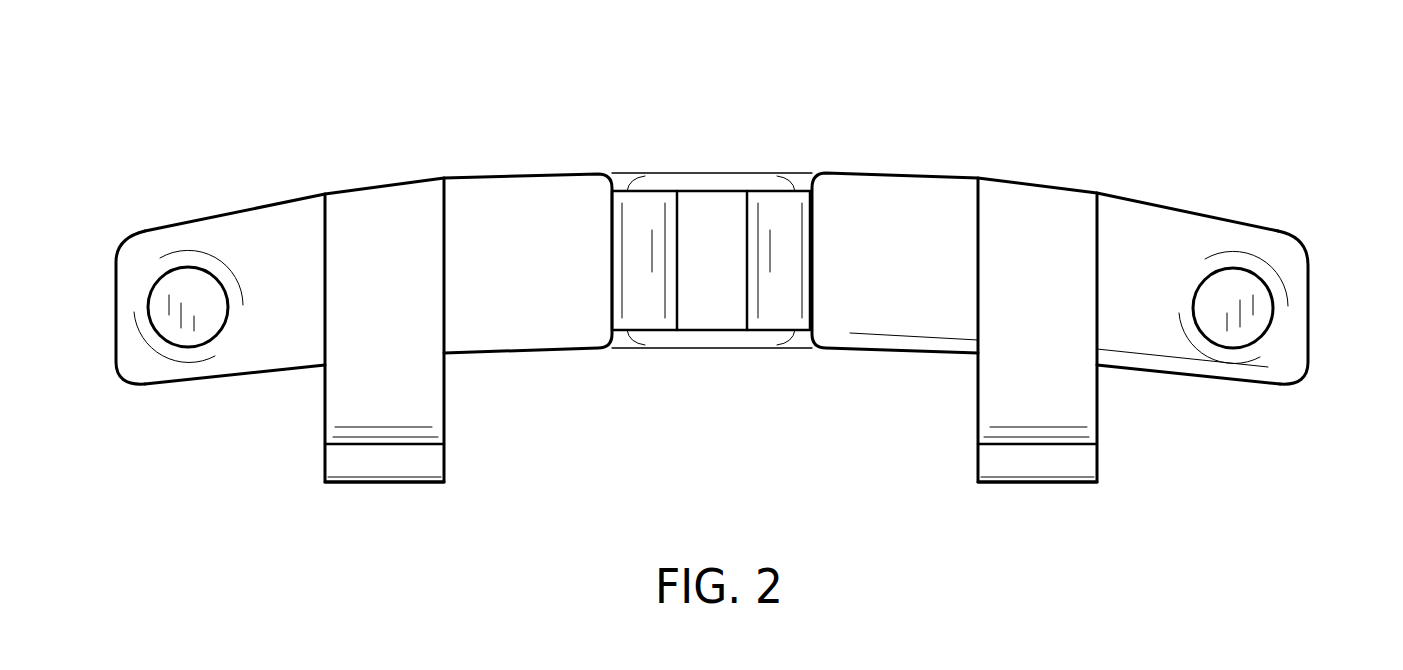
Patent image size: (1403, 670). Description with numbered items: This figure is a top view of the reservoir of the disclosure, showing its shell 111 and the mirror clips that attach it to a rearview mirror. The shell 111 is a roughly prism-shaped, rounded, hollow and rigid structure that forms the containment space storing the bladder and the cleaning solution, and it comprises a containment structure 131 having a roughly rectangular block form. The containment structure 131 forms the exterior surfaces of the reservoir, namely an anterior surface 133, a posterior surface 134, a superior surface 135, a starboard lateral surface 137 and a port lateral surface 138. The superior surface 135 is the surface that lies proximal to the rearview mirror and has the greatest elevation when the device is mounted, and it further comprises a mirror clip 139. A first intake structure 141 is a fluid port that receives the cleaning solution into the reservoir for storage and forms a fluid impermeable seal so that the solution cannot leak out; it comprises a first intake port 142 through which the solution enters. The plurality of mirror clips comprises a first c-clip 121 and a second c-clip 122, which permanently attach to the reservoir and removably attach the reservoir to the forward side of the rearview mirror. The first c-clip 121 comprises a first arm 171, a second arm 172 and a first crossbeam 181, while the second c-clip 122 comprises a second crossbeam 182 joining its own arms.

The shell 111 is at (268, 180).
The first c-clip 121 is at (369, 525).
The second c-clip 122 is at (1020, 522).
The containment structure 131 is at (190, 383).
The anterior surface 133 is at (877, 177).
The posterior surface 134 is at (892, 350).
The superior surface 135 is at (1133, 260).
The starboard lateral surface 137 is at (1308, 316).
The port lateral surface 138 is at (116, 310).
The mirror clip 139 is at (780, 215).
The first intake structure 141 is at (188, 300).
The first intake port 142 is at (1230, 300).
The first arm 171 is at (395, 405).
The second arm 172 is at (1055, 395).
The first crossbeam 181 is at (381, 189).
The second crossbeam 182 is at (1037, 183).